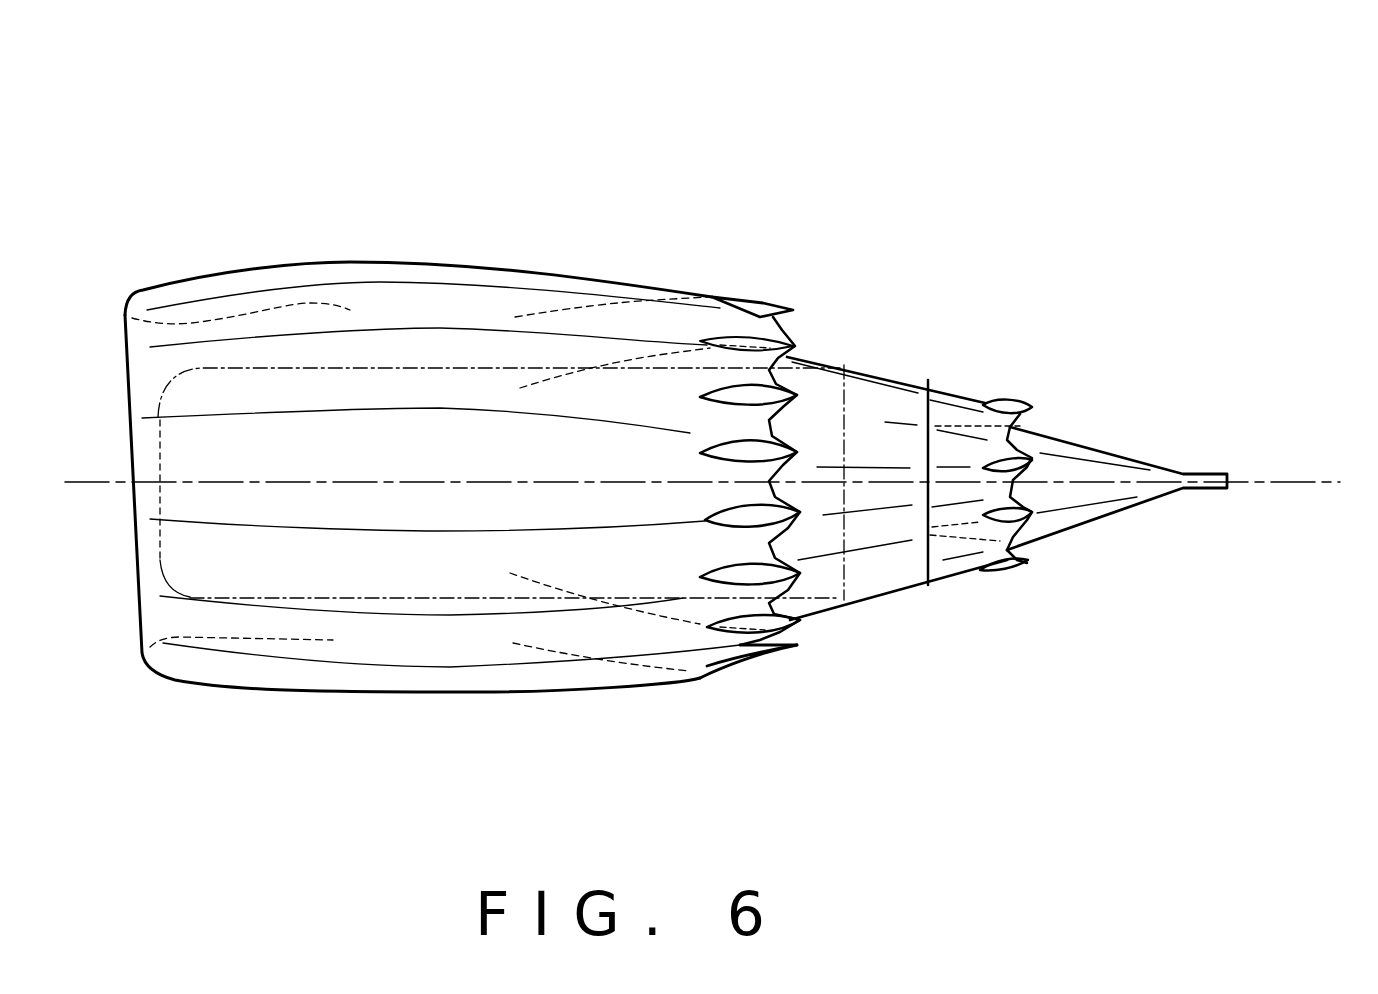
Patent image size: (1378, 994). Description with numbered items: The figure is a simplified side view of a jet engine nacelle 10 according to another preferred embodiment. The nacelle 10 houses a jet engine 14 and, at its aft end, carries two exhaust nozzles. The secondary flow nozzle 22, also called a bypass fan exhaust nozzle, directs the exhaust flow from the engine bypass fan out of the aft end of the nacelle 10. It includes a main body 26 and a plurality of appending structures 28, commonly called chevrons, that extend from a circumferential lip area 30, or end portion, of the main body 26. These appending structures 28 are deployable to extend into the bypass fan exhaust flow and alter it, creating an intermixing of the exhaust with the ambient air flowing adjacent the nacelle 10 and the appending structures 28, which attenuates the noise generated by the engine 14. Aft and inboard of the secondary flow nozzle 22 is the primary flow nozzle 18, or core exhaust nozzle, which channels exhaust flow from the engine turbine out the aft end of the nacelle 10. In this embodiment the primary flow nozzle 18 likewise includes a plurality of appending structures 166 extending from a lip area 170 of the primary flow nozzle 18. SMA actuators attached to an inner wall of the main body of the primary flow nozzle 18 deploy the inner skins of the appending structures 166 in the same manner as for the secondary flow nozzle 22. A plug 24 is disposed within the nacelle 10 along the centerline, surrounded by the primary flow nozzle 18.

The nacelle 10 is at (978, 150).
The jet engine 14 is at (274, 355).
The primary flow nozzle 18 is at (1003, 576).
The secondary flow nozzle 22 is at (768, 301).
The plug 24 is at (1125, 473).
The main body 26 is at (656, 330).
The appending structures 28 is at (800, 346).
The circumferential lip area 30 is at (724, 650).
The appending structures 166 is at (1035, 457).
The lip area 170 is at (980, 425).